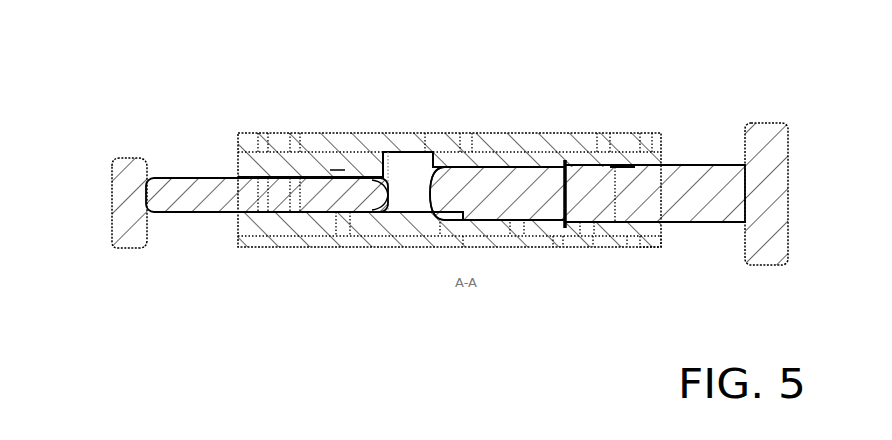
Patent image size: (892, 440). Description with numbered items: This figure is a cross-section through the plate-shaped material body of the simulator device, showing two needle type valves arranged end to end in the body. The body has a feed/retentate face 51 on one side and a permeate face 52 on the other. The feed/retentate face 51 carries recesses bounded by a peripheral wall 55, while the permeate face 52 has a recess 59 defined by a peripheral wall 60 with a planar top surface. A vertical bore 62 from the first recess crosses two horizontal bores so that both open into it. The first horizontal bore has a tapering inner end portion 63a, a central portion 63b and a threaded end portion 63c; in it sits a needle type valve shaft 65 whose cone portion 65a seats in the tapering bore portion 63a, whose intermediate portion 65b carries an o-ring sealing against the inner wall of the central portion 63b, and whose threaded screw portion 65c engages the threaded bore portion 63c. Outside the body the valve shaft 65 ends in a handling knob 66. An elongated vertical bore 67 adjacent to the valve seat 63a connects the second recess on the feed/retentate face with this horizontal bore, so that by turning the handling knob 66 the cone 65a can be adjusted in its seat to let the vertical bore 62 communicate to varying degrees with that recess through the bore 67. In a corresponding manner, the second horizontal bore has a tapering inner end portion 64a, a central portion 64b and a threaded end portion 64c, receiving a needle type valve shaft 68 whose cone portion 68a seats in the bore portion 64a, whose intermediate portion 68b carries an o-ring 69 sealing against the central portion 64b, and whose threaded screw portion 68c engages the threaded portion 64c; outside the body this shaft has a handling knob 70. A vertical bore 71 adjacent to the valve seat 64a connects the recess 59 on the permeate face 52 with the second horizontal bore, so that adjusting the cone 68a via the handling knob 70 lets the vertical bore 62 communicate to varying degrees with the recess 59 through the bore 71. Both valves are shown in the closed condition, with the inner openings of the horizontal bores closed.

The feed/retentate face 51 is at (389, 133).
The permeate face 52 is at (307, 249).
The peripheral wall 55 is at (645, 150).
The recess 59 is at (551, 237).
The peripheral wall 60 is at (645, 243).
The vertical bore 62 is at (413, 190).
The tapering inner end portion 63a is at (440, 222).
The central portion 63b is at (517, 222).
The threaded end portion 63c is at (587, 222).
The tapering inner end portion 64a is at (363, 210).
The central portion 64b is at (307, 212).
The threaded end portion 64c is at (260, 173).
The needle type valve shaft 65 is at (716, 150).
The cone portion 65a is at (447, 168).
The intermediate portion 65b is at (530, 168).
The threaded screw portion 65c is at (622, 172).
The handling knob 66 is at (502, 168).
The vertical bore 67 is at (481, 165).
The needle type valve shaft 68 is at (181, 221).
The cone portion 68a is at (372, 180).
The intermediate portion 68b is at (312, 177).
The threaded screw portion 68c is at (298, 172).
The o-ring 69 is at (336, 170).
The handling knob 70 is at (115, 170).
The vertical bore 71 is at (343, 213).